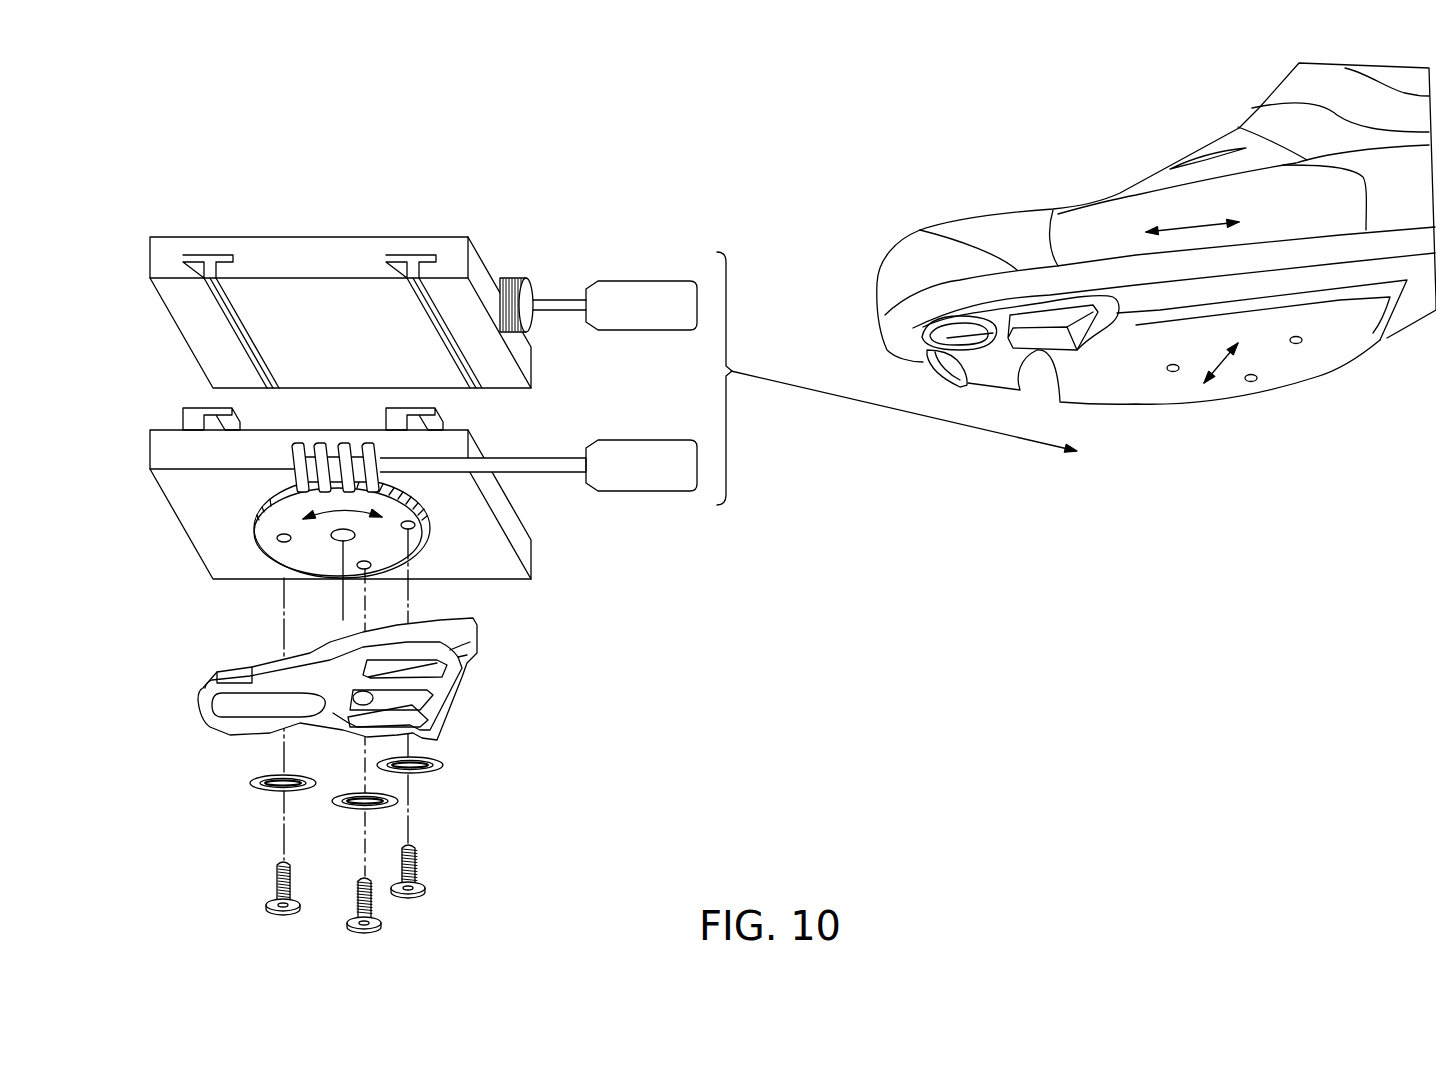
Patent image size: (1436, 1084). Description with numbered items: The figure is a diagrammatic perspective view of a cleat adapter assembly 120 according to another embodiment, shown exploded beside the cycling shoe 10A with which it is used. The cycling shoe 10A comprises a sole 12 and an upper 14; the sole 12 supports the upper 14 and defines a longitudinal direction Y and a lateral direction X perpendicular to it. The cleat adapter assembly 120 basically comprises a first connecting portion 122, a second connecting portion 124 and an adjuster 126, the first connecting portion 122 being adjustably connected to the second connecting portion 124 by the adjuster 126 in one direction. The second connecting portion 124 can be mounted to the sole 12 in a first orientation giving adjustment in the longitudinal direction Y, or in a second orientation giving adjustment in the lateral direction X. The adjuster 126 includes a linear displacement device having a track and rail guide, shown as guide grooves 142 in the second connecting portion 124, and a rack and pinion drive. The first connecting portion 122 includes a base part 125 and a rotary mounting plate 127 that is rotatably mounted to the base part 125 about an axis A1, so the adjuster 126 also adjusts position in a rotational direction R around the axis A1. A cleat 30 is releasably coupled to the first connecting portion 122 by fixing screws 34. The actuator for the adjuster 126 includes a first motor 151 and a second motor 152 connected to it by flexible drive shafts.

The cycling shoe 10A is at (1156, 270).
The sole 12 is at (1190, 416).
The upper 14 is at (1110, 180).
The cleat 30 is at (178, 724).
The fixing screws 34 is at (267, 908).
The cleat adapter assembly 120 is at (758, 282).
The first connecting portion 122 is at (140, 447).
The second connecting portion 124 is at (140, 254).
The base part 125 is at (220, 538).
The adjuster 126 is at (588, 552).
The rotary mounting plate 127 is at (388, 535).
The guide grooves 142 is at (212, 338).
The first motor 151 is at (643, 492).
The second motor 152 is at (649, 281).
The rotational direction R is at (262, 497).
The axis A1 is at (342, 550).
The lateral direction X is at (1212, 360).
The longitudinal direction Y is at (1198, 222).